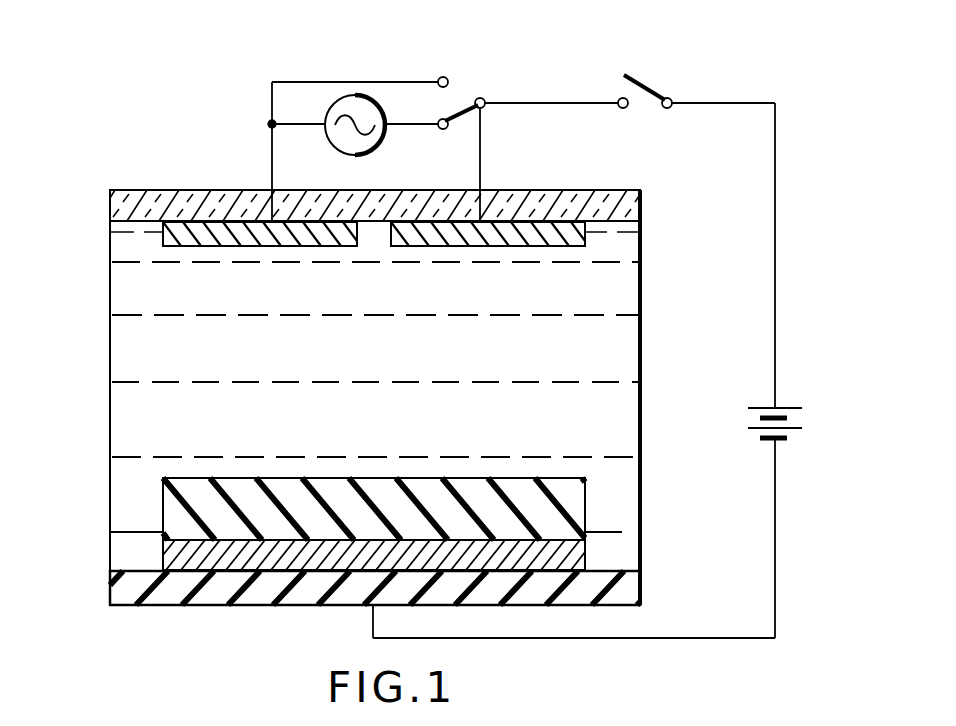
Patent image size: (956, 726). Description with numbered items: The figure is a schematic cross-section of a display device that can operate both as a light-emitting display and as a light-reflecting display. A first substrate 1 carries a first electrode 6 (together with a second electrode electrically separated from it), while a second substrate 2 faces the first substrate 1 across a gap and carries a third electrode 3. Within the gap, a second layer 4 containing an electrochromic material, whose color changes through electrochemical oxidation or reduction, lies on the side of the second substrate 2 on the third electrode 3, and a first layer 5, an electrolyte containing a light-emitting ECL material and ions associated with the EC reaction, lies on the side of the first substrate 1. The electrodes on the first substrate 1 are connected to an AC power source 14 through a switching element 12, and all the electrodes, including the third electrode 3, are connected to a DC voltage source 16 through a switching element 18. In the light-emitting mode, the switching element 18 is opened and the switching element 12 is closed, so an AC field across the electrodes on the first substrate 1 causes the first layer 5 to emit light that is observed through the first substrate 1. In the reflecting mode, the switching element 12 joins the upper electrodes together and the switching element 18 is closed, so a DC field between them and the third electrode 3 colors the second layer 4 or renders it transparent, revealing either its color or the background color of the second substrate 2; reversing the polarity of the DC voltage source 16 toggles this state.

The first substrate 1 is at (640, 205).
The second substrate 2 is at (640, 590).
The third electrode 3 is at (585, 551).
The second layer 4 is at (585, 498).
The first layer 5 is at (640, 345).
The first electrode 6 is at (162, 246).
The switching element 12 is at (467, 87).
The AC power source 14 is at (368, 140).
The DC voltage source 16 is at (801, 390).
The switching element 18 is at (657, 79).